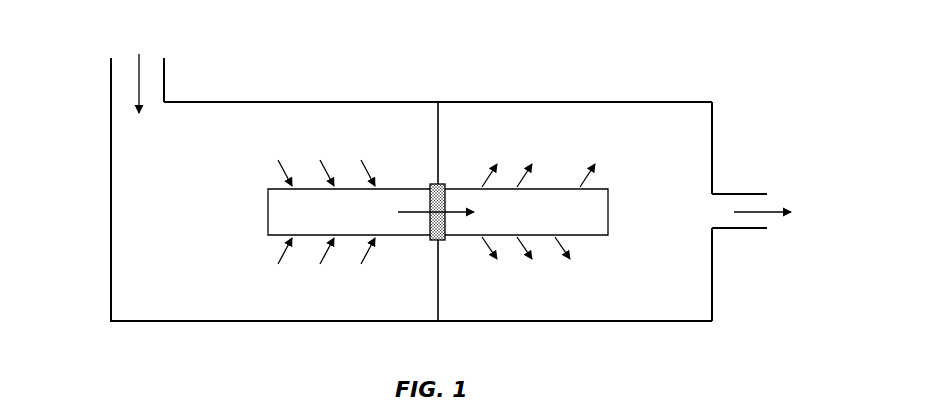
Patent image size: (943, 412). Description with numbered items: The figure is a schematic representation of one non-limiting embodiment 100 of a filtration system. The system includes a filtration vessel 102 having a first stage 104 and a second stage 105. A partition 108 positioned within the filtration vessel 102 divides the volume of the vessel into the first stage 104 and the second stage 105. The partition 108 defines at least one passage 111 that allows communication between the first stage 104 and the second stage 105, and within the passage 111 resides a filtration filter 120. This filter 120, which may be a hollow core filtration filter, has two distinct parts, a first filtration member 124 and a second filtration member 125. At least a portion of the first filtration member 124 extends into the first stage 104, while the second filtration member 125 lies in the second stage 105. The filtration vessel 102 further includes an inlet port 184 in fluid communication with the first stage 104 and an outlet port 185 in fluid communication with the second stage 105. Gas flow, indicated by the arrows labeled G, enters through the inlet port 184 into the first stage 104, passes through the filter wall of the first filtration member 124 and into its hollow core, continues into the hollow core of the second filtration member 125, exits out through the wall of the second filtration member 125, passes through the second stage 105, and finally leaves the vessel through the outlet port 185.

The filtration system 100 is at (153, 355).
The filtration vessel 102 is at (424, 100).
The first stage 104 is at (190, 118).
The second stage 105 is at (657, 100).
The partition 108 is at (439, 135).
The passage 111 is at (450, 246).
The filtration filter 120 is at (559, 160).
The first filtration member 124 is at (267, 212).
The second filtration member 125 is at (590, 228).
The inlet port 184 is at (103, 48).
The outlet port 185 is at (772, 184).